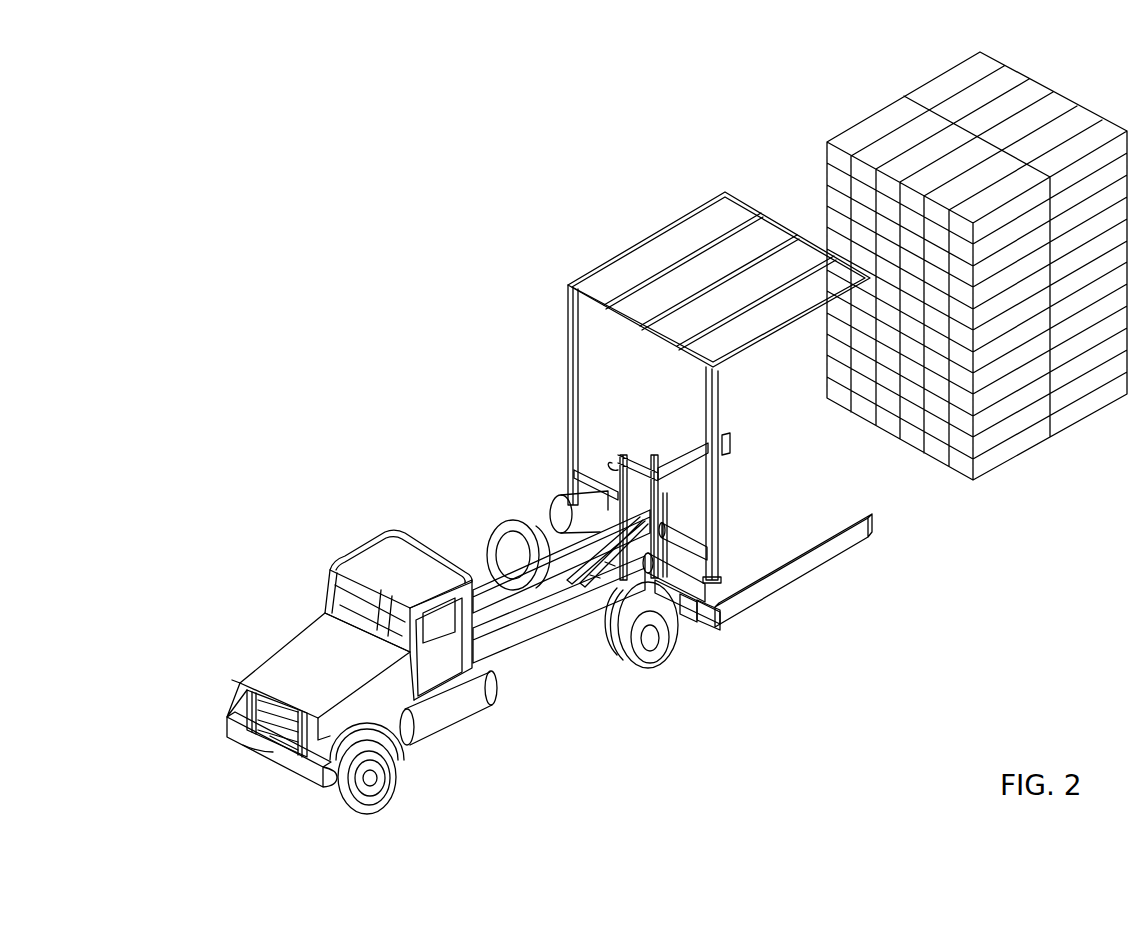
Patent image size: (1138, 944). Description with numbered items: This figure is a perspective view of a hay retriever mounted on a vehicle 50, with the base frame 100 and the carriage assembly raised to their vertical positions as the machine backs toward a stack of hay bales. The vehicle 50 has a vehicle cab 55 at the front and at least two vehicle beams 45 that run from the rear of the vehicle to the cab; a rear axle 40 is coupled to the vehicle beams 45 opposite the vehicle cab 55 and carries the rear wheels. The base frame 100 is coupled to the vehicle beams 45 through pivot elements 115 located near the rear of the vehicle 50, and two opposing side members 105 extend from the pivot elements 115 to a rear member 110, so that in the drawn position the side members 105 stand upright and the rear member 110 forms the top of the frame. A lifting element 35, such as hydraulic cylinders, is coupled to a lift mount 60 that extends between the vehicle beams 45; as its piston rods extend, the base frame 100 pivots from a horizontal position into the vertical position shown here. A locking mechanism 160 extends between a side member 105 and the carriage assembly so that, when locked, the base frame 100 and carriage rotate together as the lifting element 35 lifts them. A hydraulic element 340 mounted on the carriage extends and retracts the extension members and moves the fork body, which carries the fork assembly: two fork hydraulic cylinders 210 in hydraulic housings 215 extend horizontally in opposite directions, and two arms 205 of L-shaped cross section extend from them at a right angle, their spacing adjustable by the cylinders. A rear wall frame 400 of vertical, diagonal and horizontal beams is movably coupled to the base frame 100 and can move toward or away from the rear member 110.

The vehicle 50 is at (275, 640).
The vehicle cab 55 is at (400, 572).
The vehicle beams 45 is at (497, 645).
The lift mount 60 is at (497, 530).
The lifting element 35 is at (560, 517).
The rear axle 40 is at (578, 603).
The base frame 100 is at (553, 298).
The side members 105 is at (567, 330).
The rear member 110 is at (563, 281).
The pivot elements 115 is at (569, 500).
The locking mechanism 160 is at (687, 538).
The arms 205 is at (678, 468).
The fork hydraulic cylinders 210 is at (697, 612).
The hydraulic housings 215 is at (688, 612).
The hydraulic element 340 is at (635, 590).
The rear wall frame 400 is at (657, 232).